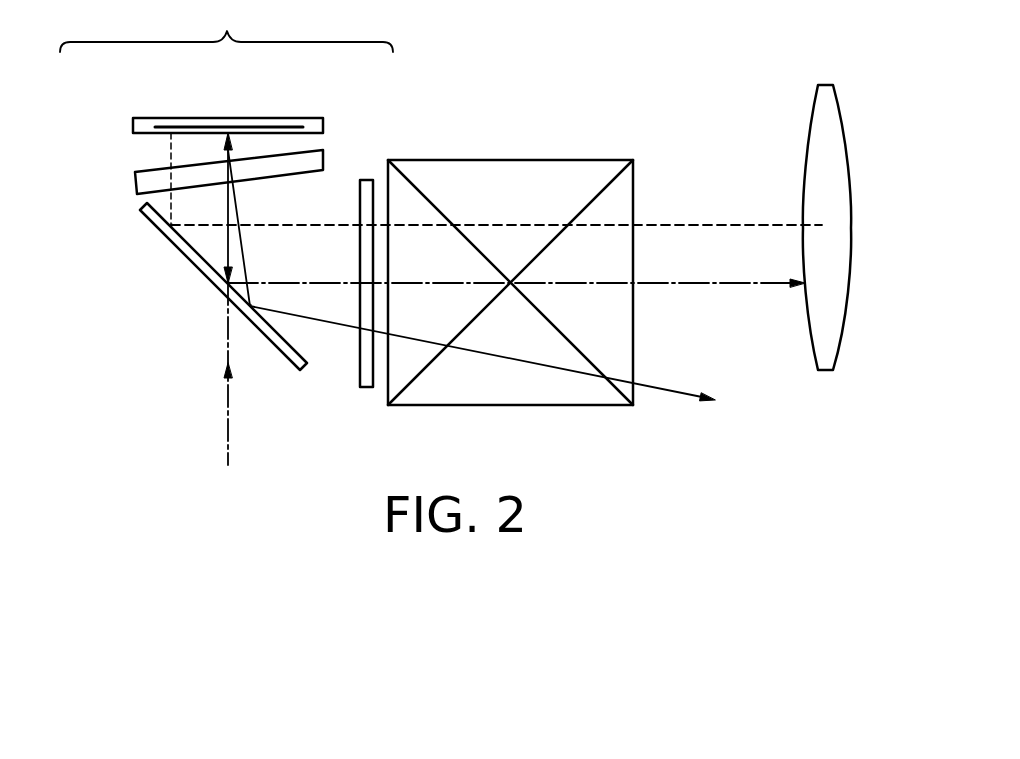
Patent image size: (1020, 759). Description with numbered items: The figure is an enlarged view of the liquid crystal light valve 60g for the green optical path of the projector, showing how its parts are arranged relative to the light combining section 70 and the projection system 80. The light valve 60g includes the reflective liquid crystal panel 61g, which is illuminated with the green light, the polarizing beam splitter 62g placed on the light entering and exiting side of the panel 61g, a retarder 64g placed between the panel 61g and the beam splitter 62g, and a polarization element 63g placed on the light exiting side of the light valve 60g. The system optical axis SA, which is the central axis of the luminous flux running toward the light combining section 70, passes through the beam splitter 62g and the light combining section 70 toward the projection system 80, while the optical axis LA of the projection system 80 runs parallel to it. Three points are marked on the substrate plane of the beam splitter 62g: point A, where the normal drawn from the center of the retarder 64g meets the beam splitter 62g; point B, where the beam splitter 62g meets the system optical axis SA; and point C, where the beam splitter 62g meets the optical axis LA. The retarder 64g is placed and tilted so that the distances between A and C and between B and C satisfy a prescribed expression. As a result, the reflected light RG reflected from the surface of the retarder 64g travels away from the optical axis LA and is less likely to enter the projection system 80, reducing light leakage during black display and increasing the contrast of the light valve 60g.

The liquid crystal light valve 60g is at (226, 26).
The reflective liquid crystal panel 61g is at (268, 117).
The polarizing beam splitter 62g is at (141, 211).
The polarization element 63g is at (371, 178).
The retarder 64g is at (147, 173).
The light combining section 70 is at (553, 160).
The projection system 80 is at (827, 83).
The optical axis of the projection system LA is at (685, 222).
The system optical axis SA is at (750, 286).
The reflected light RG is at (682, 390).
The point A is at (250, 304).
The point B is at (231, 281).
The point C is at (176, 224).